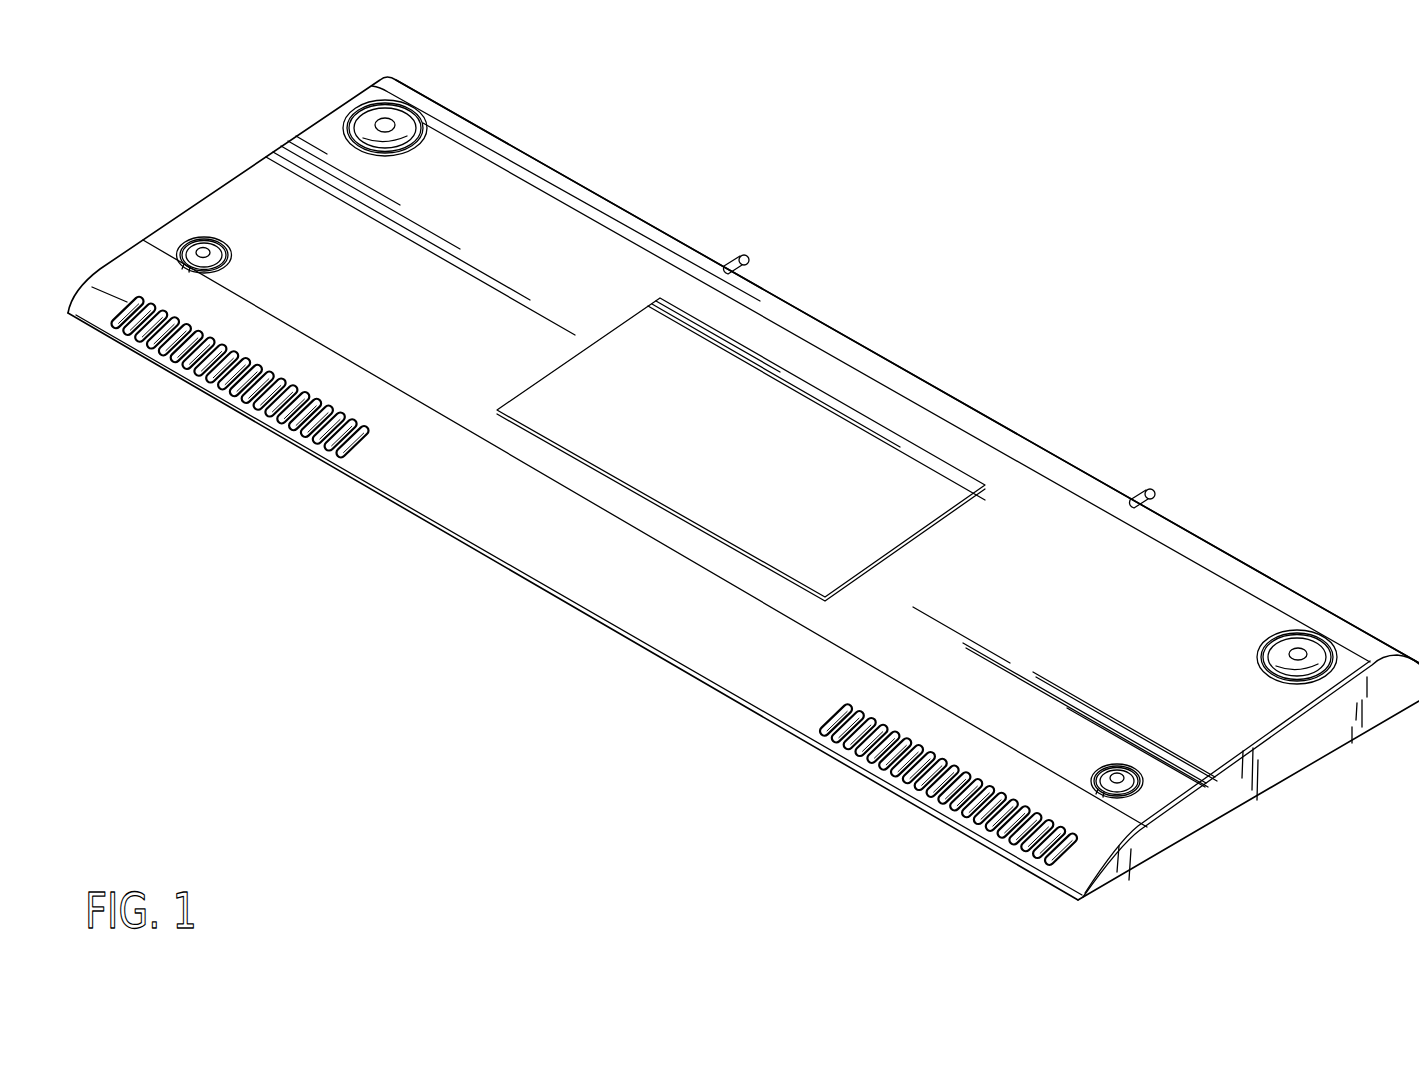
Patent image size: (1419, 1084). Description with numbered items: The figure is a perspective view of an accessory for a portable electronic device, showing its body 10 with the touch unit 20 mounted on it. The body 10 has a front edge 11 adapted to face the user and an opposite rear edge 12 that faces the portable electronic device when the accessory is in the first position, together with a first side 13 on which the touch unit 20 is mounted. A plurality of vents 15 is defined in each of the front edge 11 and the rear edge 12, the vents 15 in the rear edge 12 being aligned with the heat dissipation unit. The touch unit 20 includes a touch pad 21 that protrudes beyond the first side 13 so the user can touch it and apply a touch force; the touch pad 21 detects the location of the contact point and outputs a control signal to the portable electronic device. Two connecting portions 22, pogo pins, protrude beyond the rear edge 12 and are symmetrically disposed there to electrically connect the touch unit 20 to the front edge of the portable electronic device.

The body 10 is at (1269, 798).
The front edge 11 is at (542, 596).
The rear edge 12 is at (966, 397).
The first side 13 is at (1183, 620).
The vents 15 is at (256, 406).
The touch unit 20 is at (741, 409).
The touch pad 21 is at (858, 457).
The connecting portion 22 is at (742, 254).